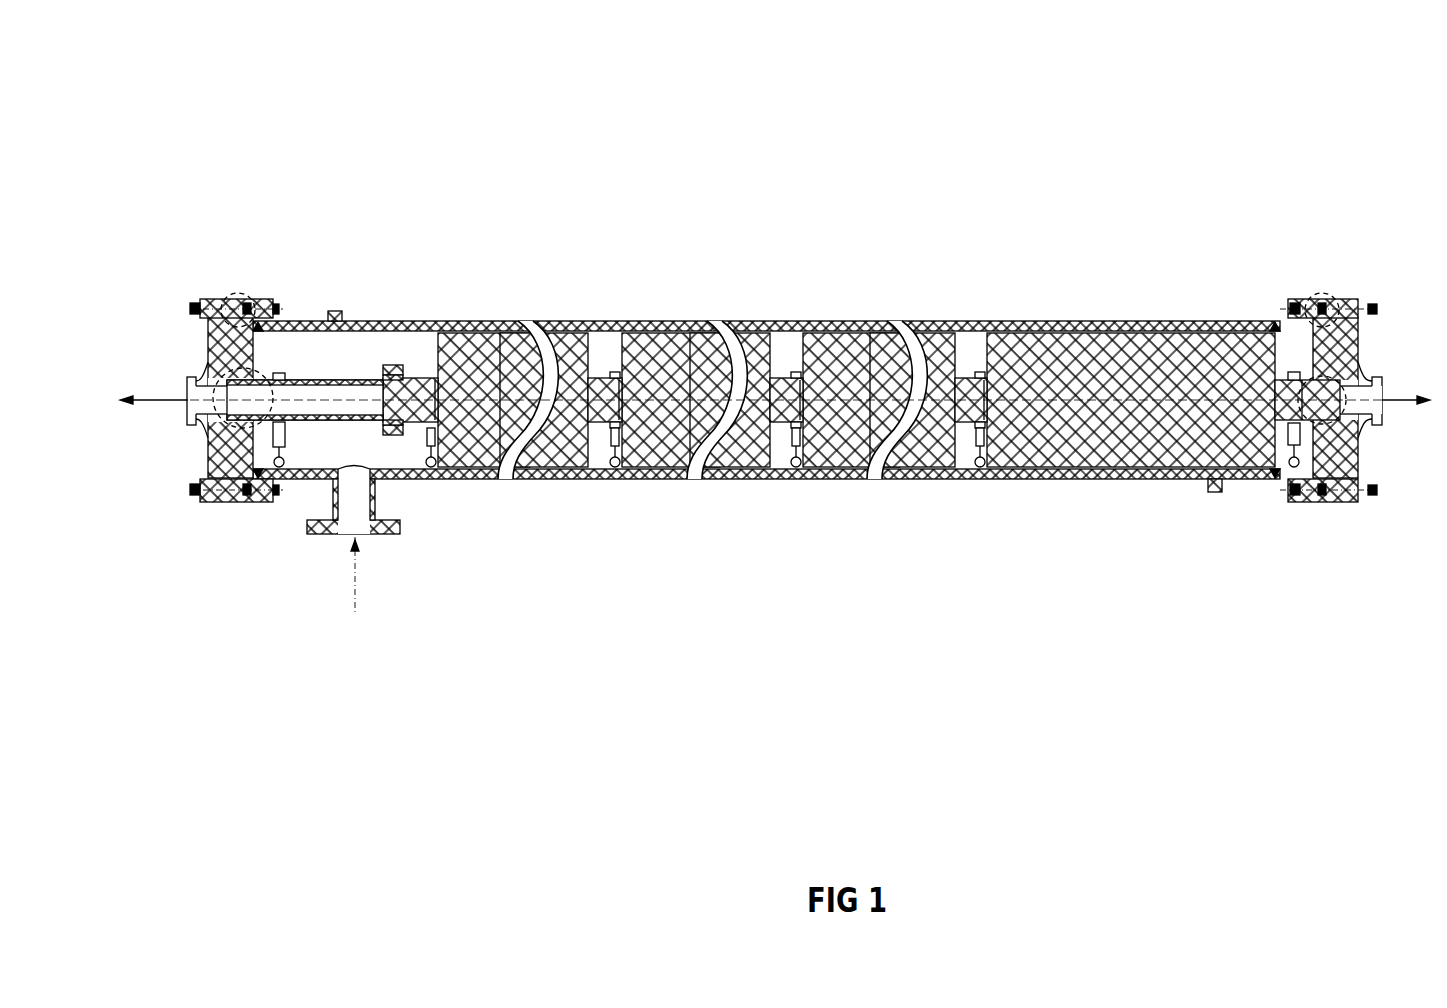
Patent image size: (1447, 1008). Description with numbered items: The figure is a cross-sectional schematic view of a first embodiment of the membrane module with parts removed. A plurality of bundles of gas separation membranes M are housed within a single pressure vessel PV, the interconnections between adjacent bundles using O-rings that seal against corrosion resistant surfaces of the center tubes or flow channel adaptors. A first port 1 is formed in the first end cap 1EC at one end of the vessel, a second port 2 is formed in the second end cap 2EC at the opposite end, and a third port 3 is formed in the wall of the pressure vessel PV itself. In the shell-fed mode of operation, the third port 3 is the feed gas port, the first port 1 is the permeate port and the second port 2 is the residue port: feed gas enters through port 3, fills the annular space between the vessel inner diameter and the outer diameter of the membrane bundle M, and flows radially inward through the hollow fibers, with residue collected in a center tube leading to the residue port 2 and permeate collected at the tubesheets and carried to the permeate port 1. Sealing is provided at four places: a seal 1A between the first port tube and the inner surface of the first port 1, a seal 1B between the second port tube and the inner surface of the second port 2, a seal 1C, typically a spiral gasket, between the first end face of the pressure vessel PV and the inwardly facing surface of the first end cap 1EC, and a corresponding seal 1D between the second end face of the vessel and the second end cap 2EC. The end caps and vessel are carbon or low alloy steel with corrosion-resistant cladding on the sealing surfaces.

The first port 1 is at (198, 407).
The seal 1A is at (263, 375).
The seal 1B is at (1311, 378).
The seal 1C is at (242, 292).
The seal 1D is at (1327, 292).
The first end cap 1EC is at (228, 465).
The second port 2 is at (1372, 393).
The second end cap 2EC is at (1342, 457).
The third port 3 is at (357, 525).
The membrane bundle M is at (1218, 428).
The pressure vessel PV is at (663, 477).